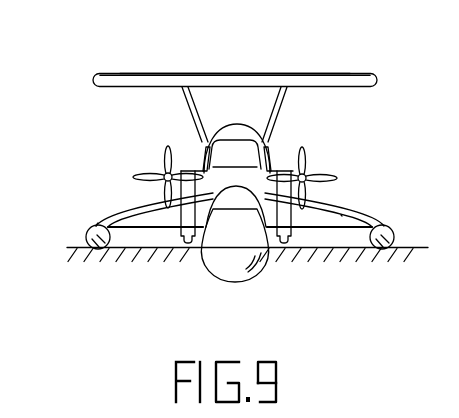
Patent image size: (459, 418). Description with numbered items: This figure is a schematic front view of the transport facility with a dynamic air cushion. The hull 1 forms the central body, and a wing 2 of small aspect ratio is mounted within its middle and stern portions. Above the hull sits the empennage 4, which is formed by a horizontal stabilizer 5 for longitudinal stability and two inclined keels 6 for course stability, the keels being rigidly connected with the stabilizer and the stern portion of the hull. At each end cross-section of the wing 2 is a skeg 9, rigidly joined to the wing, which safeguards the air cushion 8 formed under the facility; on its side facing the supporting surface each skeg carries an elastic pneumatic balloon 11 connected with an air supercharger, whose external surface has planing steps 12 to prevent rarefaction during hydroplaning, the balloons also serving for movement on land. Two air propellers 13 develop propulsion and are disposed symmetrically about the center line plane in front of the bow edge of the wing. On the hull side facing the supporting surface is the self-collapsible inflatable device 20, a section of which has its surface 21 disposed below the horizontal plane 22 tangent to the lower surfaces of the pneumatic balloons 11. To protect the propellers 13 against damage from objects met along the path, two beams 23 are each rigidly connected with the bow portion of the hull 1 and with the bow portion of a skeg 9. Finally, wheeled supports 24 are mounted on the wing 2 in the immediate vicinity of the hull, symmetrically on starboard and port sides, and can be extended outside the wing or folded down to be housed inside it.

The hull 1 is at (238, 109).
The wing 2 is at (341, 216).
The empennage 4 is at (214, 69).
The horizontal stabilizer 5 is at (310, 86).
The inclined keels 6 is at (184, 98).
The air cushion 8 is at (142, 242).
The skegs 9 is at (95, 226).
The pneumatic balloon 11 is at (388, 230).
The planing steps 12 is at (88, 232).
The air propellers 13 is at (319, 175).
The self-collapsible inflatable device 20 is at (223, 266).
The surface 21 is at (248, 274).
The horizontal plane 22 is at (76, 258).
The beams 23 is at (122, 207).
The wheeled supports 24 is at (185, 248).